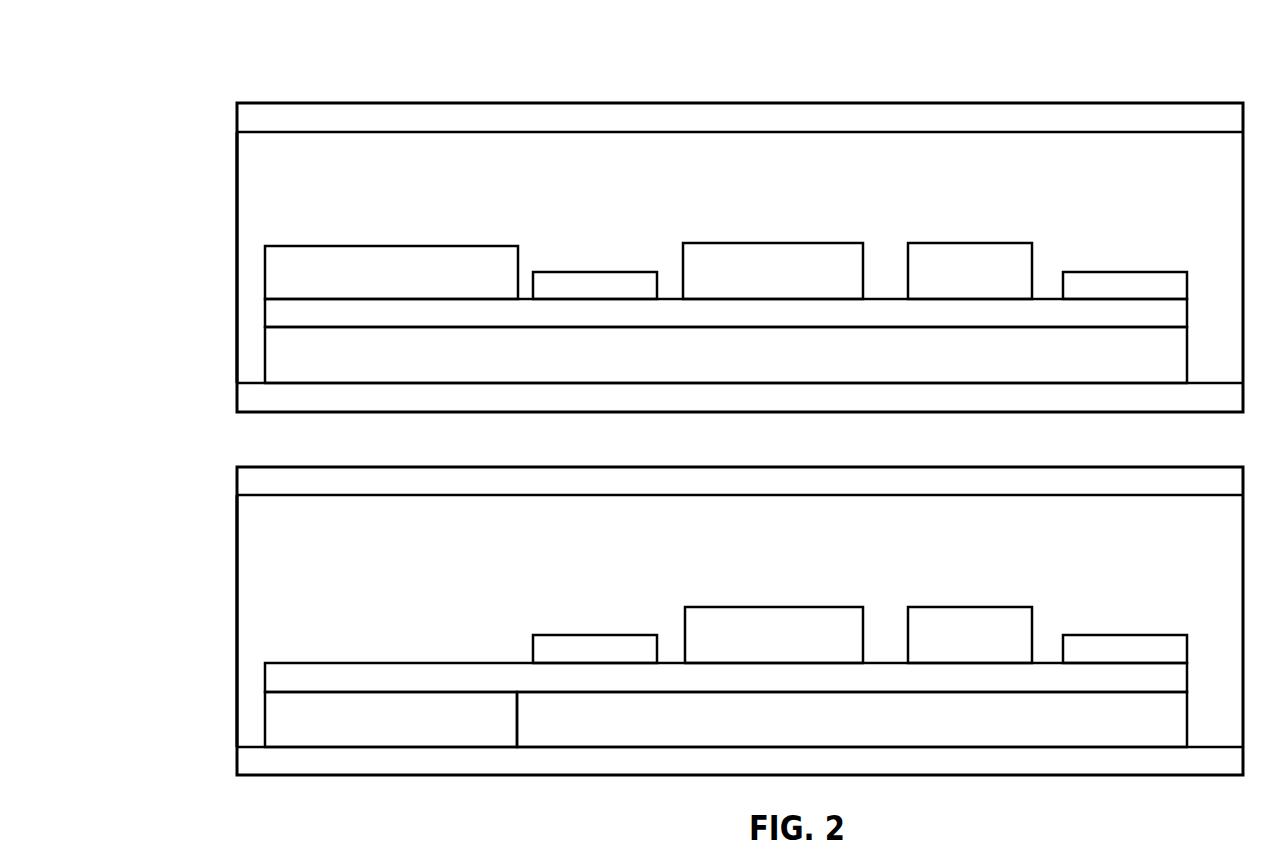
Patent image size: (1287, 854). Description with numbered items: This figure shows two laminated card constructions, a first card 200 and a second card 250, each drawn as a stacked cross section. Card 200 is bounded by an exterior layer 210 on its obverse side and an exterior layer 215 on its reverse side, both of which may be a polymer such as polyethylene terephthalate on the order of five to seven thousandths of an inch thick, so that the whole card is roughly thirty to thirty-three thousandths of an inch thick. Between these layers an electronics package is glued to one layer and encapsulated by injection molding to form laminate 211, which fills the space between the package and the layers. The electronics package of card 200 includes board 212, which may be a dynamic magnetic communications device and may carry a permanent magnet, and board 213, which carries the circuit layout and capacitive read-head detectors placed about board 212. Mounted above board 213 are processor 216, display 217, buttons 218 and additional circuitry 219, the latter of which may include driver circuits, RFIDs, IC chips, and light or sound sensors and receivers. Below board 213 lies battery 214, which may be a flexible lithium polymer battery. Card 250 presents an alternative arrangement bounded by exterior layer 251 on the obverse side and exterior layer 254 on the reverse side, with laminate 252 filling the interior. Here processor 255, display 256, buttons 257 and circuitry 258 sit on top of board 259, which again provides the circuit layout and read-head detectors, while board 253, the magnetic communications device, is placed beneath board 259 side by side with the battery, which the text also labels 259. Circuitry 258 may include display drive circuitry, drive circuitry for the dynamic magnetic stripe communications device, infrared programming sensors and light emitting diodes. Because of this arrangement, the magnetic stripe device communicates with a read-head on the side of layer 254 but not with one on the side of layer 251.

The card 200 is at (785, 88).
The layer 210 is at (237, 109).
The laminate 211 is at (237, 220).
The board 212 is at (265, 252).
The board 213 is at (265, 306).
The battery 214 is at (265, 349).
The layer 215 is at (237, 392).
The processor 216 is at (596, 271).
The display 217 is at (683, 248).
The buttons 218 is at (908, 268).
The additional circuitry 219 is at (1132, 268).
The card 250 is at (735, 451).
The exterior layer 251 is at (237, 486).
The housing side wall / interior space 252 is at (237, 571).
The board 253 is at (265, 712).
The exterior layer 254 is at (237, 755).
The processor 255 is at (545, 646).
The display 256 is at (697, 616).
The buttons 257 is at (920, 616).
The circuitry 258 is at (1075, 645).
The board 259 is at (268, 672).